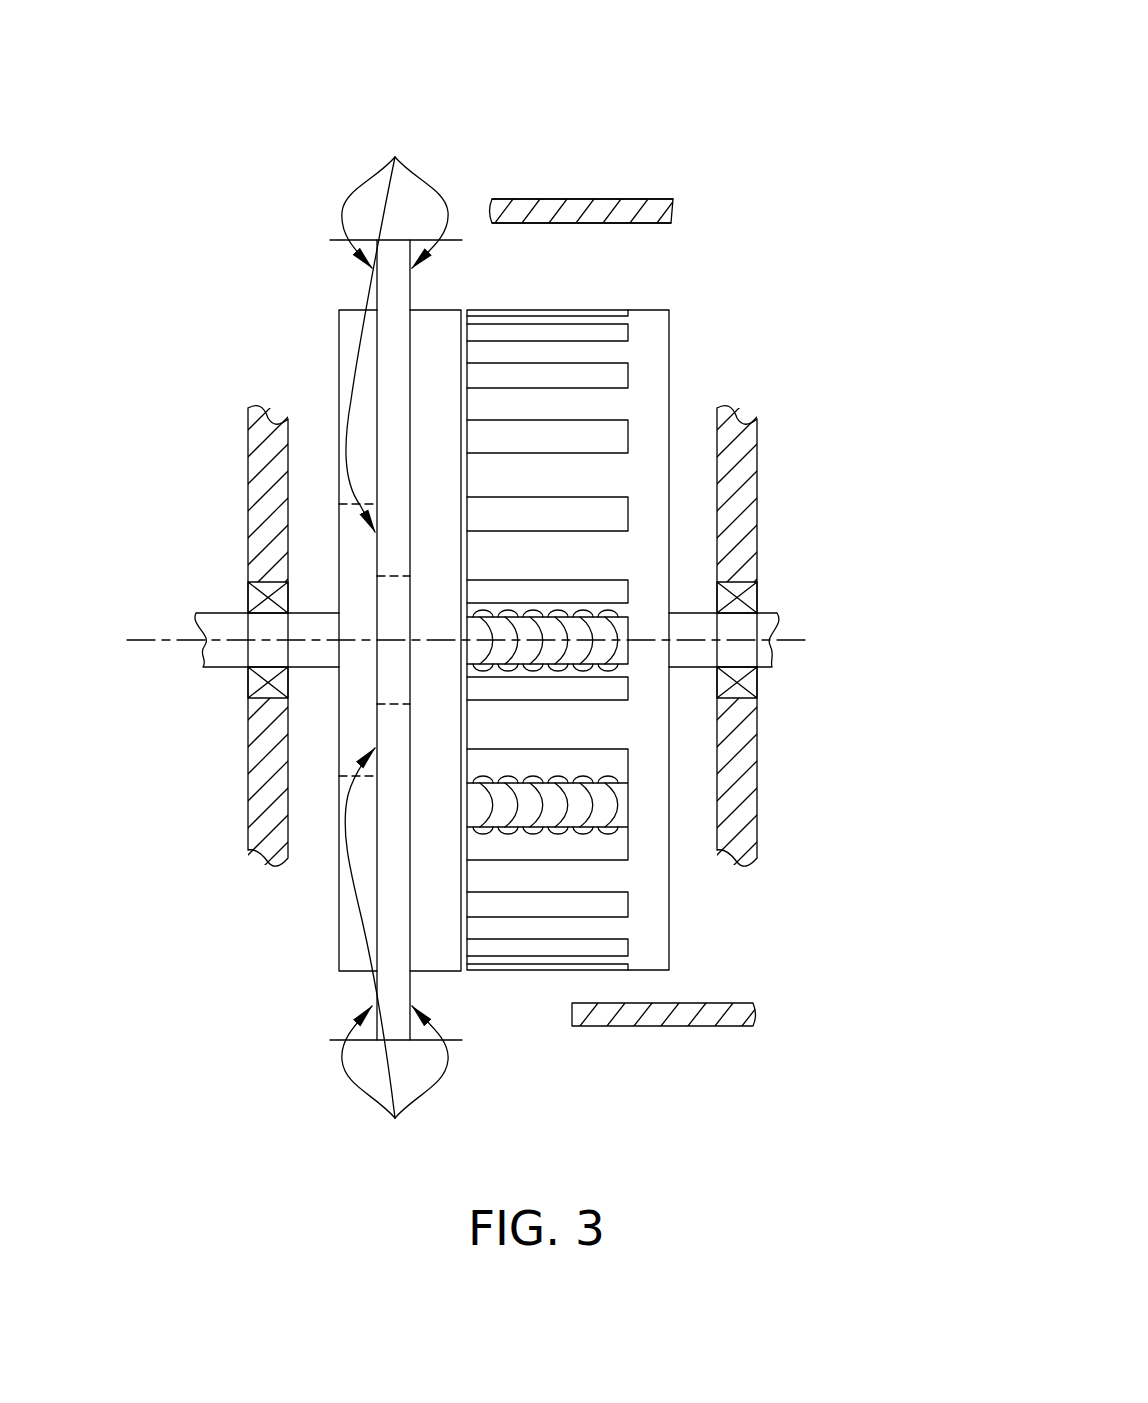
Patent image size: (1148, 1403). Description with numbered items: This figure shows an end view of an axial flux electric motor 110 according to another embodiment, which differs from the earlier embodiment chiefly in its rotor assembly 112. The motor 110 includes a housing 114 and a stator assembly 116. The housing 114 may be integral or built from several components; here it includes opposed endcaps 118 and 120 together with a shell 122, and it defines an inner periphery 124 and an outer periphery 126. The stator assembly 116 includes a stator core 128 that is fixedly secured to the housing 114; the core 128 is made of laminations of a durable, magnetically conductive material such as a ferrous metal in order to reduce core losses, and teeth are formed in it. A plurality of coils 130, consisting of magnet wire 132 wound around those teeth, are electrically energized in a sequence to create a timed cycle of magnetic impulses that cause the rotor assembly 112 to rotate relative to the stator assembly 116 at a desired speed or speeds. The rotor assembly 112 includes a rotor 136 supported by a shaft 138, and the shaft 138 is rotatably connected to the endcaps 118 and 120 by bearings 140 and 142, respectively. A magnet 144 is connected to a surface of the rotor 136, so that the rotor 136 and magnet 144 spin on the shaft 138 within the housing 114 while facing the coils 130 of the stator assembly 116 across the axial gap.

The axial flux electric motor 110 is at (708, 78).
The rotor assembly 112 is at (323, 347).
The housing 114 is at (282, 277).
The stator assembly 116 is at (735, 365).
The endcap 118 is at (247, 443).
The endcap 120 is at (757, 474).
The shell 122 is at (673, 208).
The inner periphery 124 is at (583, 223).
The outer periphery 126 is at (552, 199).
The stator core 128 is at (670, 930).
The coils 130 is at (625, 793).
The magnet wire 132 is at (623, 807).
The rotor 136 is at (340, 915).
The shaft 138 is at (210, 613).
The bearing 140 is at (247, 683).
The bearing 142 is at (757, 598).
The magnet 144 is at (412, 800).